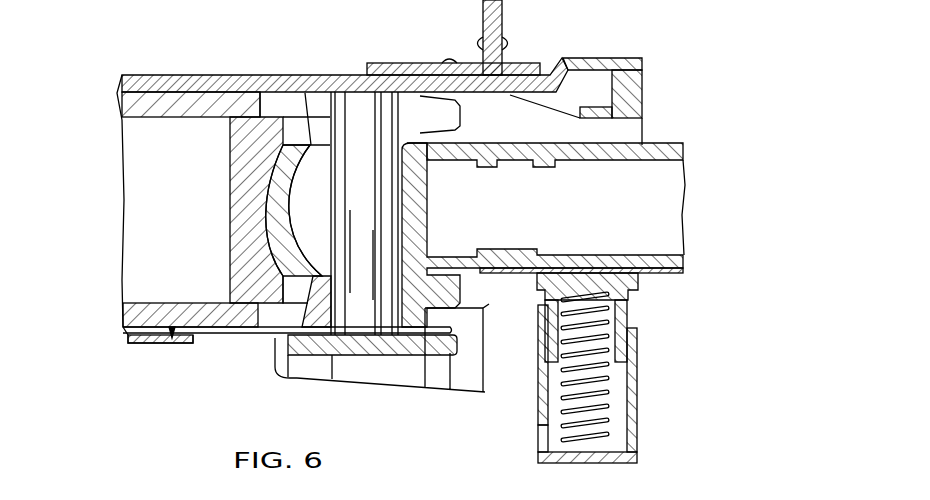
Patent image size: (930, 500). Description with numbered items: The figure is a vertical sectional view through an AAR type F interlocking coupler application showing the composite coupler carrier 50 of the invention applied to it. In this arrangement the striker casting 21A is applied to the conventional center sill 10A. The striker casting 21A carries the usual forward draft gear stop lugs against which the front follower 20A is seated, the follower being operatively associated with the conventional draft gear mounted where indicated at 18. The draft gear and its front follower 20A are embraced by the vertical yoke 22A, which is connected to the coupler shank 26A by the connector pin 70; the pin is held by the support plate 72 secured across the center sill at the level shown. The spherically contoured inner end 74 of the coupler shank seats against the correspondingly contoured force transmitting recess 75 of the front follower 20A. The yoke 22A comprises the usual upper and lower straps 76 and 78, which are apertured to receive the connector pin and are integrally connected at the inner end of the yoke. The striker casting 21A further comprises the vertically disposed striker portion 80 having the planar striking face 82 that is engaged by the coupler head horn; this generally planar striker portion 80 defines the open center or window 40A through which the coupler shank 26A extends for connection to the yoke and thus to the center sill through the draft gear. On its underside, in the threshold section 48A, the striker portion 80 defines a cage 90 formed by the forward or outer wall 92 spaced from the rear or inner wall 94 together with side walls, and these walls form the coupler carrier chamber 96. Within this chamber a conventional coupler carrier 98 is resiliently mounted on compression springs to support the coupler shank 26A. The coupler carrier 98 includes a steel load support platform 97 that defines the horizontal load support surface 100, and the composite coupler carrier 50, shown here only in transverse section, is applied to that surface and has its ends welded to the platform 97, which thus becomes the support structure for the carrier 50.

The draft gear location 18 is at (145, 135).
The upper strap 76 is at (178, 97).
The front follower 20A is at (246, 128).
The center sill 10A is at (325, 66).
The connector pin 70 is at (385, 100).
The striker casting 21A is at (615, 52).
The striker portion 80 is at (633, 82).
The striking face 82 is at (647, 130).
The window 40A is at (750, 91).
The coupler shank 26A is at (667, 148).
The horizontal load support surface 100 is at (650, 266).
The composite coupler carrier 50 is at (665, 288).
The load support platform 97 is at (632, 291).
The threshold section 48A is at (634, 390).
The outer wall 92 is at (630, 408).
The coupler carrier chamber 96 is at (628, 418).
The coupler carrier 98 is at (538, 298).
The inner wall 94 is at (540, 378).
The cage 90 is at (535, 416).
The support plate 72 is at (309, 338).
The vertical yoke 22A is at (172, 342).
The lower strap 78 is at (130, 330).
The force transmitting recess 75 is at (270, 181).
The inner end of coupler shank 74 is at (272, 221).